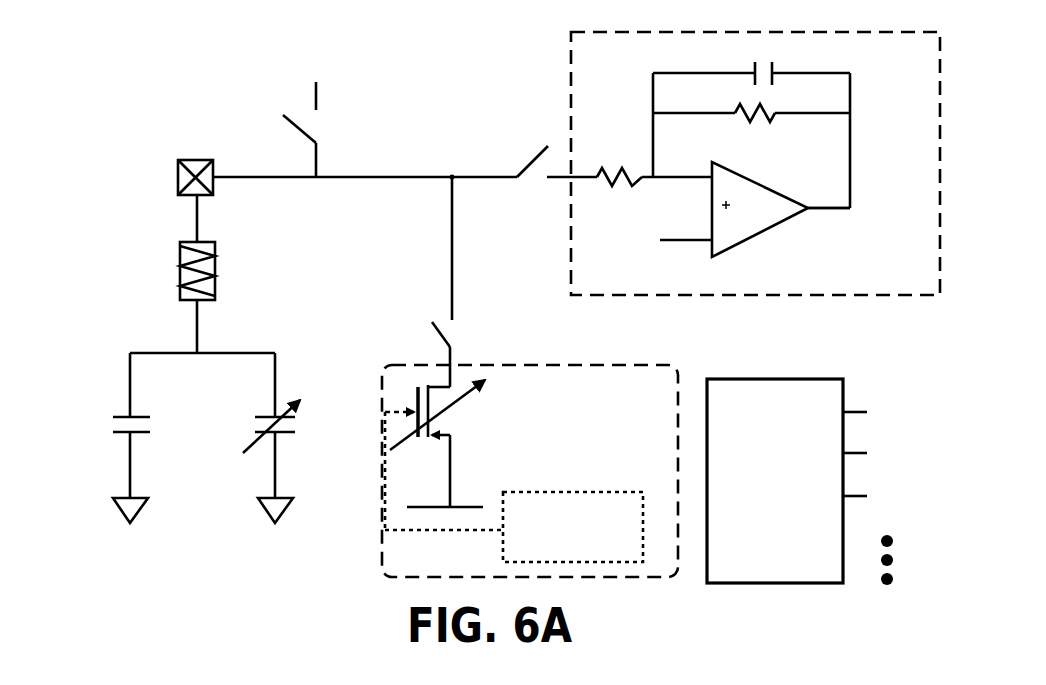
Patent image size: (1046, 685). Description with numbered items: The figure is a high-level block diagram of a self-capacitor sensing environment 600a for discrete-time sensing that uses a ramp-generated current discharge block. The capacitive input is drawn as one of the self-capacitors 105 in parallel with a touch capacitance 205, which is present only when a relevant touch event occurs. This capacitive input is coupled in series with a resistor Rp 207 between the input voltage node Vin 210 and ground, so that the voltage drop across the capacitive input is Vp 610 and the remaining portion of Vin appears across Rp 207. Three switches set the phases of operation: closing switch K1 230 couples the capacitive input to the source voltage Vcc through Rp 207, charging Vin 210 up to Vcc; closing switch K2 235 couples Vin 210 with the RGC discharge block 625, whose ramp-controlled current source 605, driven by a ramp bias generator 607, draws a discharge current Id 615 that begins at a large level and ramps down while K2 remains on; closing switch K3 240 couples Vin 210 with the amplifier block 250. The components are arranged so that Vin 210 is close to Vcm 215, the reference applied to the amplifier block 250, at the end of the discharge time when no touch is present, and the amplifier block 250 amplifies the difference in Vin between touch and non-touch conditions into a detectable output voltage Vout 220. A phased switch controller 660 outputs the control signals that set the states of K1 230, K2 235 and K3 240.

The self-capacitor sensing environment 600a is at (185, 66).
The switch K1 230 is at (346, 115).
The switch K3 240 is at (557, 142).
The switch K2 235 is at (485, 354).
The input voltage node 210 is at (465, 164).
The amplifier block 250 is at (755, 163).
The output voltage 220 is at (862, 223).
The common-mode voltage 215 is at (653, 255).
The resistor Rp 207 is at (240, 271).
The voltage across capacitive input 610 is at (200, 318).
The self-capacitor 105 is at (97, 438).
The touch capacitance 205 is at (306, 438).
The discharge current 615 is at (475, 294).
The ramp-controlled current source 605 is at (451, 443).
The RGC discharge block 625 is at (530, 471).
The ramp bias generator 607 is at (514, 487).
The phased switch controller 660 is at (830, 482).